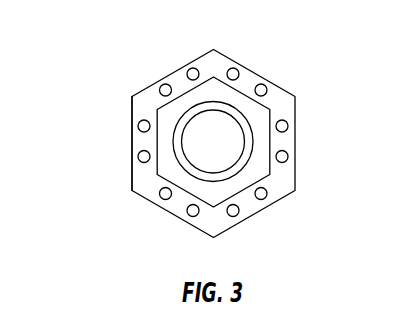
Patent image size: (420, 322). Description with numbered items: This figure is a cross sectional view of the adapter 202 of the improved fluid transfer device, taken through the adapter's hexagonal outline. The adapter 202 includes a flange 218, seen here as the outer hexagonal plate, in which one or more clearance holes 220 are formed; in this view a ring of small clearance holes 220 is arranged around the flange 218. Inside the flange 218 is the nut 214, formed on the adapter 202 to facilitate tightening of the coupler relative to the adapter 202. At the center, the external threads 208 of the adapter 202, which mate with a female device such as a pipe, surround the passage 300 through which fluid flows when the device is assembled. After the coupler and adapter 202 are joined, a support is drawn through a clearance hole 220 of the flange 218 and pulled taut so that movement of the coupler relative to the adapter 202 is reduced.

The adapter 202 is at (220, 45).
The flange 218 is at (137, 101).
The clearance holes 220 is at (191, 72).
The nut 214 is at (269, 177).
The passage 300 is at (198, 162).
The external threads 208 is at (202, 183).